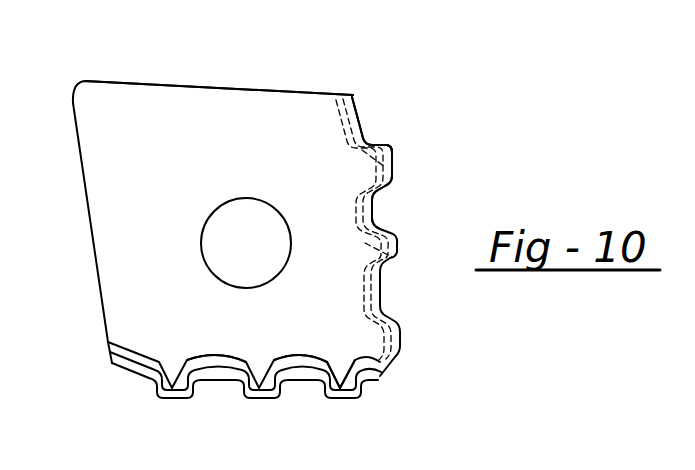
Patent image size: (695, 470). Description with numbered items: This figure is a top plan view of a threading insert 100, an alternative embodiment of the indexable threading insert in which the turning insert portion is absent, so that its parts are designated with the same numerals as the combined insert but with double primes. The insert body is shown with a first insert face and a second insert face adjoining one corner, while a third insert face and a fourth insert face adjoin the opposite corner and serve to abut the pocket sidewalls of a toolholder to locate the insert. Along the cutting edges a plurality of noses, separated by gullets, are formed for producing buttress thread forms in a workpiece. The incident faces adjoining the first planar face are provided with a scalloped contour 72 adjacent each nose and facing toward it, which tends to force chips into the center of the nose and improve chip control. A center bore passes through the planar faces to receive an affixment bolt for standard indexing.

The threading insert 100 is at (388, 106).
The scalloped contour 72 is at (397, 256).